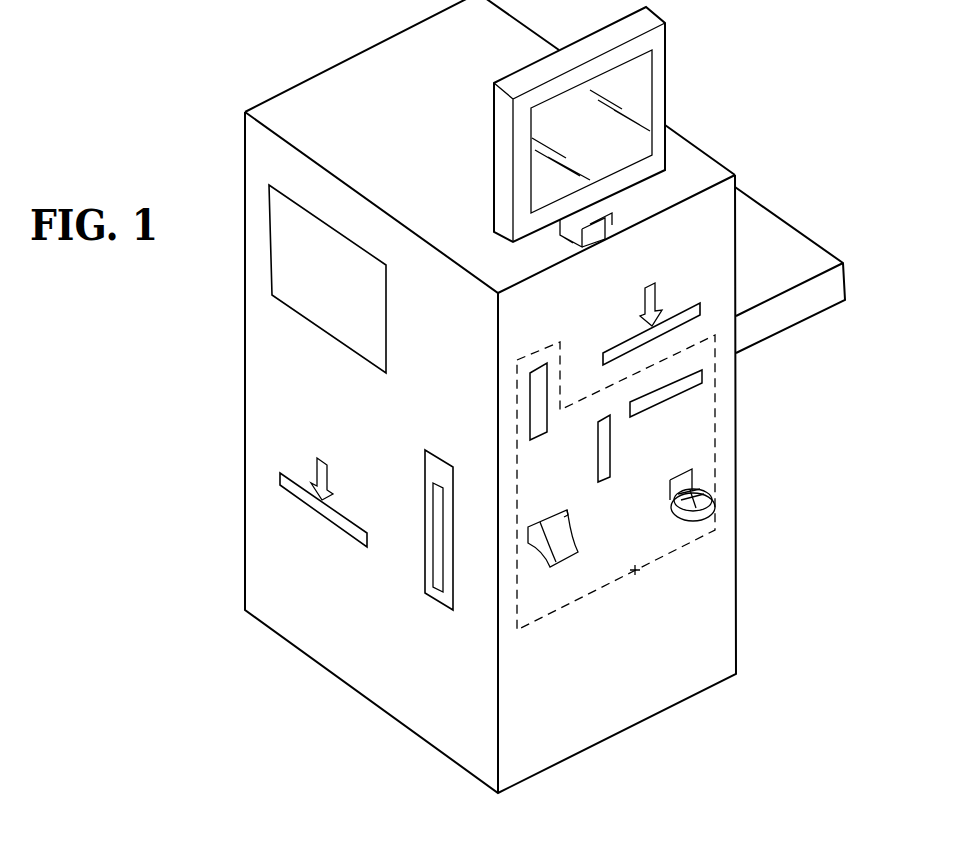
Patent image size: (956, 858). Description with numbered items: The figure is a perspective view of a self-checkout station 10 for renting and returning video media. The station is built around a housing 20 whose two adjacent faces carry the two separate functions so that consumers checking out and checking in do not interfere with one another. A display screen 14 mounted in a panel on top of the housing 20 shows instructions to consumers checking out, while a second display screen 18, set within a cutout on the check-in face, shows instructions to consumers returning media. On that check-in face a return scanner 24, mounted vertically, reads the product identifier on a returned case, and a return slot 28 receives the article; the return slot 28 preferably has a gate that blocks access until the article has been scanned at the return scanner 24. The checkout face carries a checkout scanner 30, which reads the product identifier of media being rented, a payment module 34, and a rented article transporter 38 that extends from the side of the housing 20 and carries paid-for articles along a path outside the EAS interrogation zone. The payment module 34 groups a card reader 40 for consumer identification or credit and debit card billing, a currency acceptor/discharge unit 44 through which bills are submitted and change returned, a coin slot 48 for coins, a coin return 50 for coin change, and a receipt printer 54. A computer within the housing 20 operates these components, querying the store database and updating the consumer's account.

The checkout station 10 is at (180, 461).
The display screen 14 is at (638, 77).
The display screen 18 is at (387, 320).
The housing 20 is at (360, 80).
The return scanner 24 is at (317, 513).
The return slot 28 is at (440, 450).
The checkout scanner 30 is at (675, 307).
The payment module 34 is at (638, 582).
The rented article transporter 38 is at (777, 245).
The card reader 40 is at (538, 435).
The currency acceptor/discharge unit 44 is at (703, 377).
The coin slot 48 is at (610, 453).
The coin return 50 is at (703, 497).
The receipt printer 54 is at (568, 515).